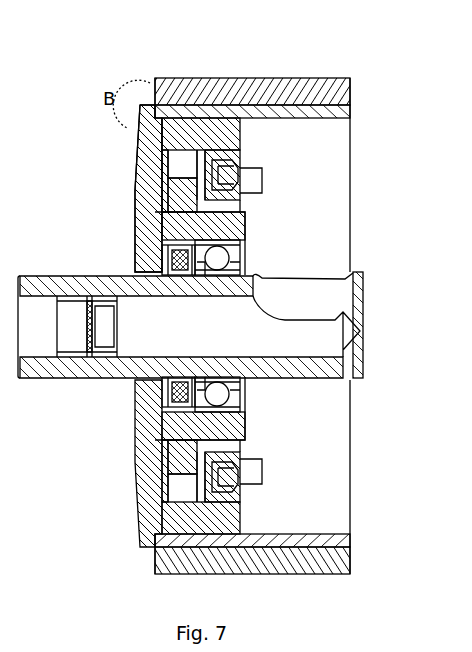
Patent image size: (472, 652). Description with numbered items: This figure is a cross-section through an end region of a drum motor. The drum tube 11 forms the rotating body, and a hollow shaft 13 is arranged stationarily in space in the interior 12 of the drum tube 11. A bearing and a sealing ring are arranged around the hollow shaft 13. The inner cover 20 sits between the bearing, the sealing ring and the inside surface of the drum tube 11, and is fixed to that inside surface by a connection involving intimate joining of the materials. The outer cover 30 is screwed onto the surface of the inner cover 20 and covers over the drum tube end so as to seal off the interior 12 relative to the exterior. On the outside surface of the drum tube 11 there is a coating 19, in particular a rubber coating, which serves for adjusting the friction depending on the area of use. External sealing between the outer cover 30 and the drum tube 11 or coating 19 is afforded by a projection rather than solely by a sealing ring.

The drum tube 11 is at (350, 112).
The interior 12 is at (342, 178).
The hollow shaft 13 is at (55, 378).
The coating 19 is at (323, 80).
The inner cover 20 is at (156, 238).
The outer cover 30 is at (148, 192).